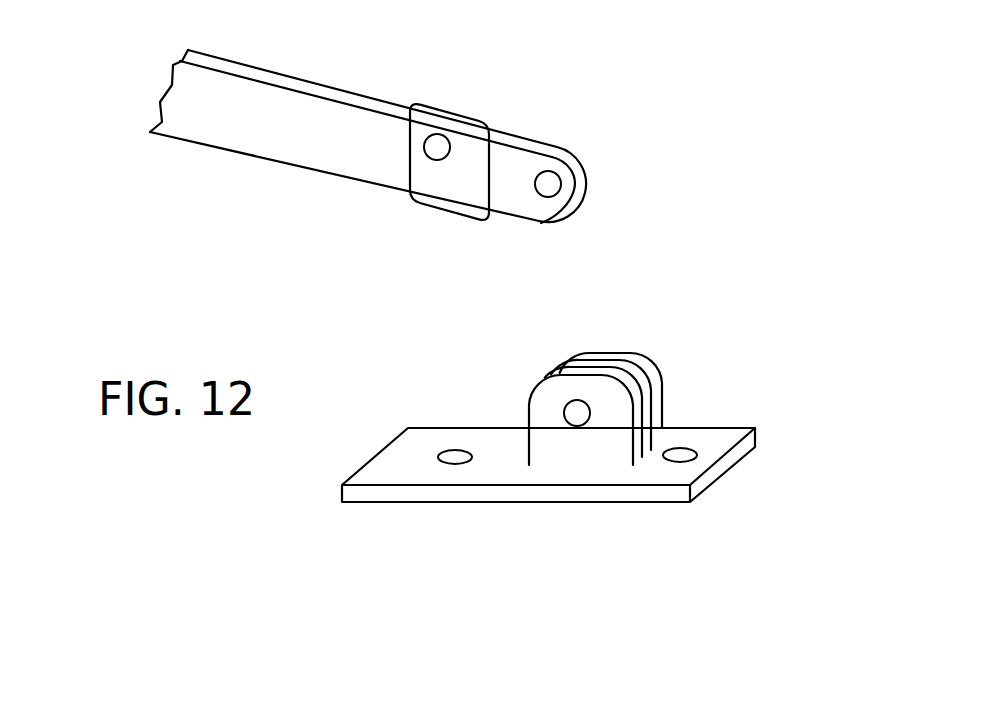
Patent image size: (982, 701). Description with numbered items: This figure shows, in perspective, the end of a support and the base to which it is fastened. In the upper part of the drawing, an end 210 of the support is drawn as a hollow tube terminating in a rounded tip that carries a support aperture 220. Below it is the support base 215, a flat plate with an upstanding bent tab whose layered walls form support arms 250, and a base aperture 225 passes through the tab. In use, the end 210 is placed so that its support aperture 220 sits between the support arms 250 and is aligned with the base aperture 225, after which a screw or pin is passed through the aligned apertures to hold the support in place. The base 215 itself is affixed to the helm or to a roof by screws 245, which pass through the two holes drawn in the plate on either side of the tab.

The end of support 210 is at (484, 105).
The support aperture 220 is at (556, 185).
The support base 215 is at (578, 445).
The base aperture 225 is at (575, 418).
The screws 245 is at (458, 455).
The support arms 250 is at (536, 391).